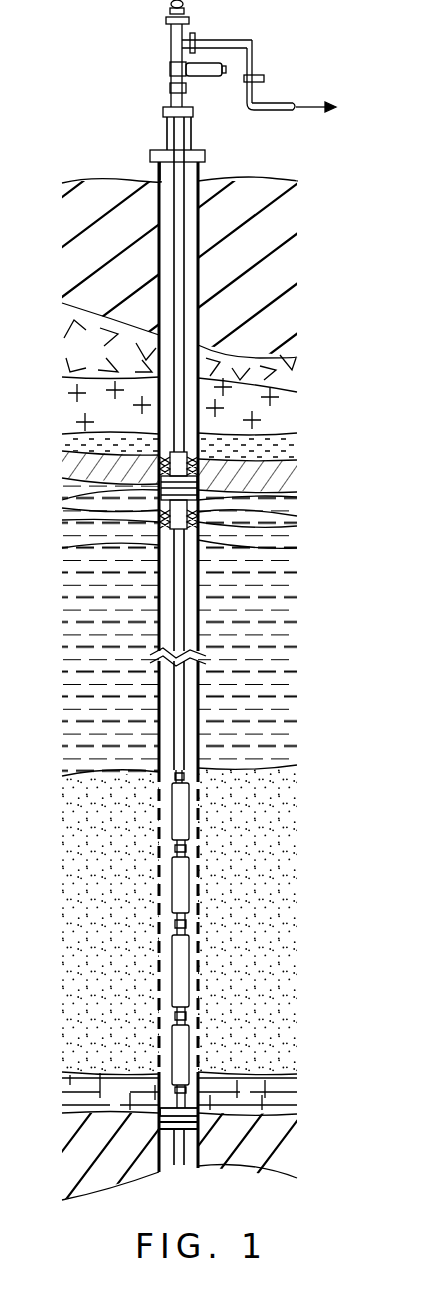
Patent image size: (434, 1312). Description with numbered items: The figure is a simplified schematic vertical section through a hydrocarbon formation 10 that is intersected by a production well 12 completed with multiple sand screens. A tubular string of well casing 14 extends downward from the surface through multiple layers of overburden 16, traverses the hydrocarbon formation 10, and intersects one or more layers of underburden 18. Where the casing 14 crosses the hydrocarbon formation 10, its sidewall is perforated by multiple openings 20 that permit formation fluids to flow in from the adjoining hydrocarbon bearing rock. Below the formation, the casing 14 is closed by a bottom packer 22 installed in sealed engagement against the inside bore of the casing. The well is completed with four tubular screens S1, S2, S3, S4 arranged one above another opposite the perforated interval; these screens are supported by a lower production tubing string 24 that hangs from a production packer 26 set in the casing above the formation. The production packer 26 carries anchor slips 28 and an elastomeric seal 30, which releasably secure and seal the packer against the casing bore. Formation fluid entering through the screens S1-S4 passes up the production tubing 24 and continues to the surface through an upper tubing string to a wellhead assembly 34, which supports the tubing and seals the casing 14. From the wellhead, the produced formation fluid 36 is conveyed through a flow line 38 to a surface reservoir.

The hydrocarbon formation 10 is at (280, 830).
The production well 12 is at (198, 237).
The well casing 14 is at (200, 668).
The overburden 16 is at (286, 717).
The underburden 18 is at (283, 1101).
The openings 20 is at (200, 933).
The bottom packer 22 is at (171, 1116).
The lower production tubing string 24 is at (183, 608).
The production packer 26 is at (198, 490).
The anchor slips 28 is at (198, 539).
The elastomeric seal 30 is at (162, 491).
The wellhead assembly 34 is at (158, 80).
The formation fluid 36 is at (305, 106).
The flow line 38 is at (220, 42).
The tubular screen S1 is at (180, 1054).
The tubular screen S2 is at (183, 985).
The tubular screen S3 is at (180, 895).
The tubular screen S4 is at (180, 825).